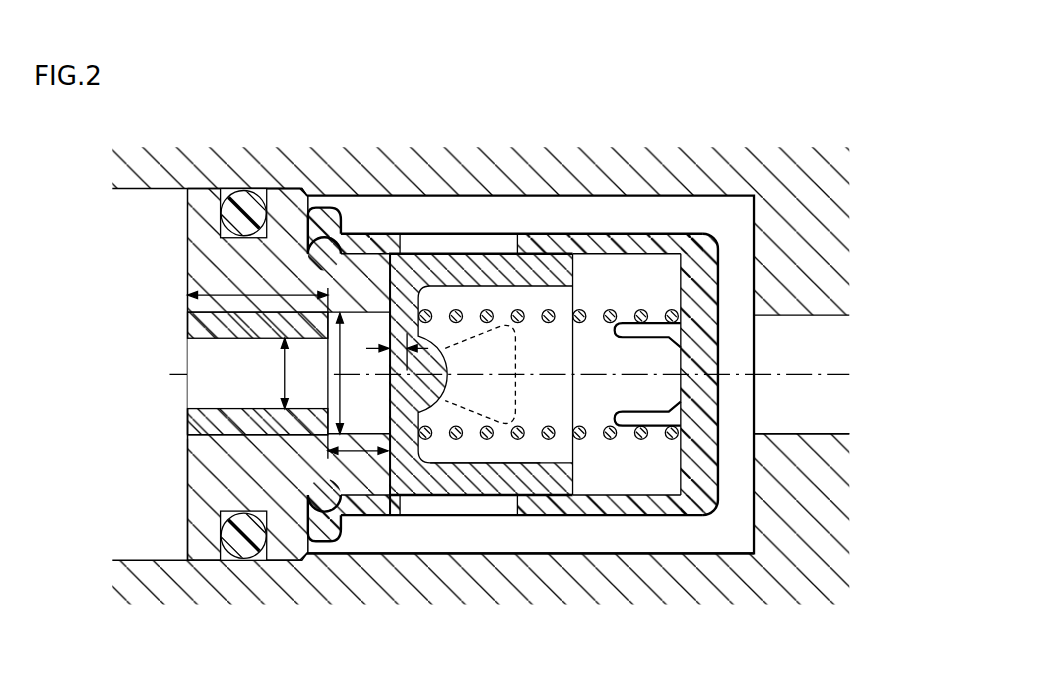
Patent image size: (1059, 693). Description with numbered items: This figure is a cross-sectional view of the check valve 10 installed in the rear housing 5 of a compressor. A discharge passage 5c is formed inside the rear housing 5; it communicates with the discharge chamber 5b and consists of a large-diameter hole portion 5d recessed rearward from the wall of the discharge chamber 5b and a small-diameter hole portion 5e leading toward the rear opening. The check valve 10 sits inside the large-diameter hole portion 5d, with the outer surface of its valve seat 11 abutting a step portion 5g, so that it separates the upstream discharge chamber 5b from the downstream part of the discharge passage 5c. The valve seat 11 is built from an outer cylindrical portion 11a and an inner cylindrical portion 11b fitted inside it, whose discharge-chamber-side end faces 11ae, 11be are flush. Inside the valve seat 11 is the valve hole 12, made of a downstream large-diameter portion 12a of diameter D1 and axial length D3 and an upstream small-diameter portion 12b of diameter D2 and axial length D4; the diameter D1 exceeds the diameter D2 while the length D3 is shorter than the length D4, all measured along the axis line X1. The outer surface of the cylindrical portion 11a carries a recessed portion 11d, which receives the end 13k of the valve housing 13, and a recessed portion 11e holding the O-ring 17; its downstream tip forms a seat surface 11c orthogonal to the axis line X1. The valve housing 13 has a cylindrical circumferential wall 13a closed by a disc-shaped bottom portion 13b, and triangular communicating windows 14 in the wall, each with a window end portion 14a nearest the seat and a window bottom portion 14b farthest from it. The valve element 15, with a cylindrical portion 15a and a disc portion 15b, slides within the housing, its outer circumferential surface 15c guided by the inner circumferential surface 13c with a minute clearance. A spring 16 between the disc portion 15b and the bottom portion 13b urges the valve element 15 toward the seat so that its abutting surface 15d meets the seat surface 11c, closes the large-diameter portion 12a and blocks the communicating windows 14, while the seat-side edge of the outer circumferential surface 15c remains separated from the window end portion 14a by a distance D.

The rear housing 5 is at (480, 390).
The discharge chamber 5b is at (150, 522).
The discharge passage 5c is at (810, 644).
The large-diameter hole portion 5d is at (688, 556).
The small-diameter hole portion 5e is at (785, 433).
The step portion 5g is at (285, 191).
The check valve 10 is at (630, 225).
The valve seat 11 is at (236, 388).
The cylindrical portion 11a is at (300, 462).
The cylindrical portion 11b is at (250, 380).
The seat surface 11c is at (402, 517).
The recessed portion 11d is at (328, 483).
The recessed portion 11e is at (221, 203).
The end face 11ae is at (188, 463).
The end face 11be is at (188, 427).
The valve hole 12 is at (203, 372).
The large-diameter portion 12a is at (243, 331).
The small-diameter portion 12b is at (257, 410).
The valve housing 13 is at (534, 374).
The circumferential wall 13a is at (586, 236).
The bottom portion 13b is at (700, 302).
The inner circumferential surface 13c is at (538, 505).
The end 13k is at (326, 257).
The communicating window 14 is at (463, 358).
The window end portion 14a is at (419, 240).
The window bottom portion 14b is at (490, 238).
The valve element 15 is at (463, 374).
The cylindrical portion 15a is at (517, 494).
The disc portion 15b is at (443, 497).
The outer circumferential surface 15c is at (488, 497).
The abutting surface 15d is at (386, 282).
The spring 16 is at (610, 440).
The O-ring 17 is at (247, 208).
The distance D is at (372, 350).
The diameter D1 is at (340, 382).
The diameter D2 is at (285, 366).
The length D3 is at (332, 452).
The length D4 is at (257, 293).
The axis line X1 is at (805, 376).